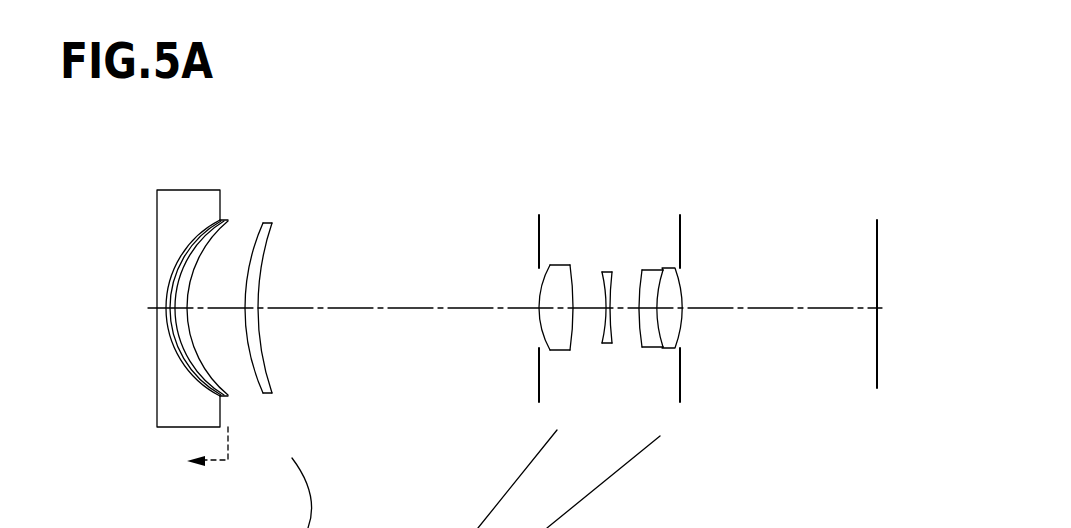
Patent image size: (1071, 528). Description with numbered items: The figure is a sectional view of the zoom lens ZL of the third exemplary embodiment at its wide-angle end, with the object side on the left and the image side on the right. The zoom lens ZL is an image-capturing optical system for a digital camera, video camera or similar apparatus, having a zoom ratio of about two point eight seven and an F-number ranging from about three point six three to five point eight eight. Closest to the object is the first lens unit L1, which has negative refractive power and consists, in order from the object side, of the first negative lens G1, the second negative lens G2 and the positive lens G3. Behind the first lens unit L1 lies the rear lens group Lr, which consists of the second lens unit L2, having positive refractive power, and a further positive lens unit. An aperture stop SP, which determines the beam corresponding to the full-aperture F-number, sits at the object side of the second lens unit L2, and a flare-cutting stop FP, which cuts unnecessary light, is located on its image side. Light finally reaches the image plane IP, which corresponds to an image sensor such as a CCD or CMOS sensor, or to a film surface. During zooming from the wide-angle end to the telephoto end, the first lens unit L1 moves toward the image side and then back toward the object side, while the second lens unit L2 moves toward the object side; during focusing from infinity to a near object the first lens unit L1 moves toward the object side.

The first lens unit L1 is at (329, 158).
The first negative lens G1 is at (221, 197).
The second negative lens G2 is at (229, 223).
The positive lens G3 is at (271, 257).
The rear lens group Lr is at (716, 117).
The second lens unit L2 is at (697, 163).
The aperture stop SP is at (537, 239).
The flare-cutting stop FP is at (681, 236).
The image plane IP is at (878, 270).
The zoom lens ZL is at (940, 382).